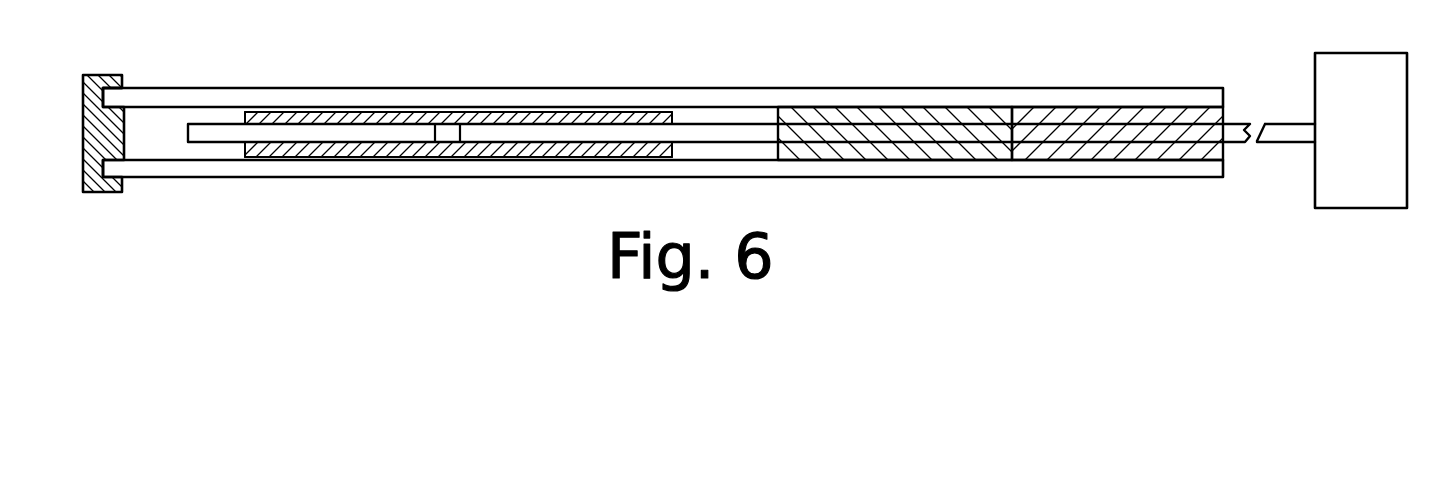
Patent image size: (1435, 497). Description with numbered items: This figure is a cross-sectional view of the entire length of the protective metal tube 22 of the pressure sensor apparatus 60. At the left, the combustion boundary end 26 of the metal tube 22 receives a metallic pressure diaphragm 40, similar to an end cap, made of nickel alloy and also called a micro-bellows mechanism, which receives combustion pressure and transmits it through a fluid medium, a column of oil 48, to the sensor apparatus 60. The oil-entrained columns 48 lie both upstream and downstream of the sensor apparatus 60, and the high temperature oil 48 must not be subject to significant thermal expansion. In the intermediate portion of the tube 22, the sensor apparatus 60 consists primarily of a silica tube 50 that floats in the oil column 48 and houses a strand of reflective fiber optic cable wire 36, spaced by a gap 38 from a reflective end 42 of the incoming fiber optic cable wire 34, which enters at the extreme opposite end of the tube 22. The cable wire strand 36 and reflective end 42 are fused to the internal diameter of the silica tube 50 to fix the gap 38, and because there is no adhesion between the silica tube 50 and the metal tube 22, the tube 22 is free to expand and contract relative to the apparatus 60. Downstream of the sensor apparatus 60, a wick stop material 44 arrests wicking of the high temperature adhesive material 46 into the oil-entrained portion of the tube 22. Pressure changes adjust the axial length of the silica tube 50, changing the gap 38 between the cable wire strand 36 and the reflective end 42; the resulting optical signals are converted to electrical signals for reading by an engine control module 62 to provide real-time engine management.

The protective metal tube 22 is at (637, 88).
The combustion boundary end 26 is at (123, 88).
The incoming fiber optic cable wire 34 is at (1240, 128).
The reflective fiber optic cable wire strand 36 is at (228, 130).
The gap 38 is at (447, 132).
The pressure diaphragm 40 is at (83, 184).
The reflective end 42 is at (605, 147).
The wick stop material 44 is at (870, 115).
The high temperature adhesive material 46 is at (1057, 112).
The column of oil 48 is at (165, 125).
The silica tube 50 is at (528, 115).
The pressure sensor apparatus 60 is at (344, 102).
The engine control module 62 is at (1383, 148).